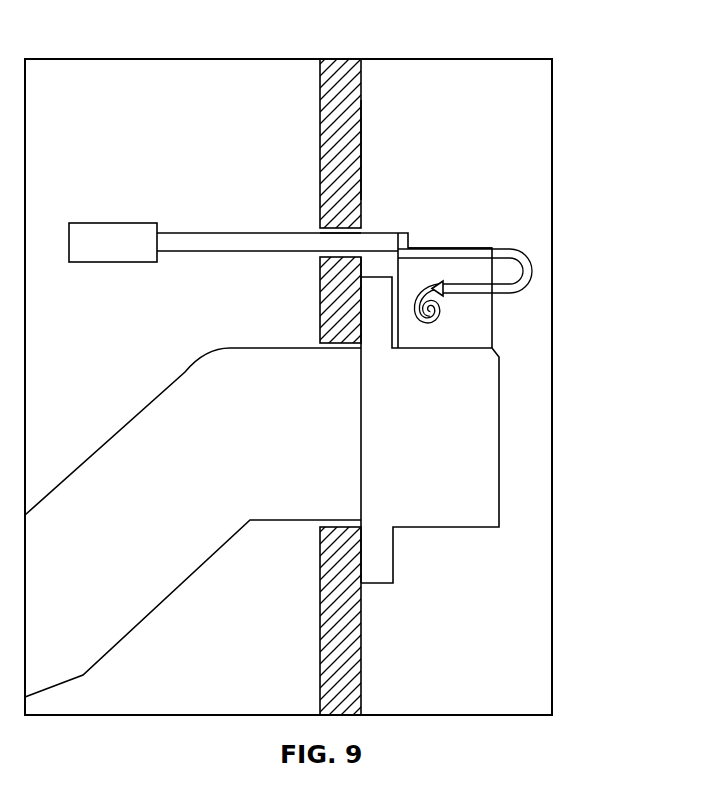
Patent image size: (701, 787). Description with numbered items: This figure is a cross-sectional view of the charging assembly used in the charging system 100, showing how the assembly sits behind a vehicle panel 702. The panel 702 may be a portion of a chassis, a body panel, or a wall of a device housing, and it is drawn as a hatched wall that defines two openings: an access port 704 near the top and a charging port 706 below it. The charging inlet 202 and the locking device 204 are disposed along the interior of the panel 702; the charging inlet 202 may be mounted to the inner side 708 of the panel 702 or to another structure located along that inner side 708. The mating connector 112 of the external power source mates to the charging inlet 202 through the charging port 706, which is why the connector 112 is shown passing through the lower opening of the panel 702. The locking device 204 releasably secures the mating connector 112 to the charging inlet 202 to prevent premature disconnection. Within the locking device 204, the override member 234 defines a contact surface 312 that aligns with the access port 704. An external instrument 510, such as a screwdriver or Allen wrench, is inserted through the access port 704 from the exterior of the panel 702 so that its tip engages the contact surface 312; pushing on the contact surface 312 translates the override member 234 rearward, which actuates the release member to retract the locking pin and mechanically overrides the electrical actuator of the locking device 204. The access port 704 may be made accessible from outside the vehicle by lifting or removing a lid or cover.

The charging system 100 is at (463, 103).
The mating connector 112 is at (124, 438).
The charging inlet 202 is at (483, 385).
The locking device 204 is at (468, 228).
The override member 234 is at (488, 250).
The contact surface 312 is at (398, 233).
The external instrument 510 is at (205, 240).
The panel 702 is at (357, 148).
The access port 704 is at (312, 229).
The charging port 706 is at (312, 343).
The inner side 708 is at (360, 165).